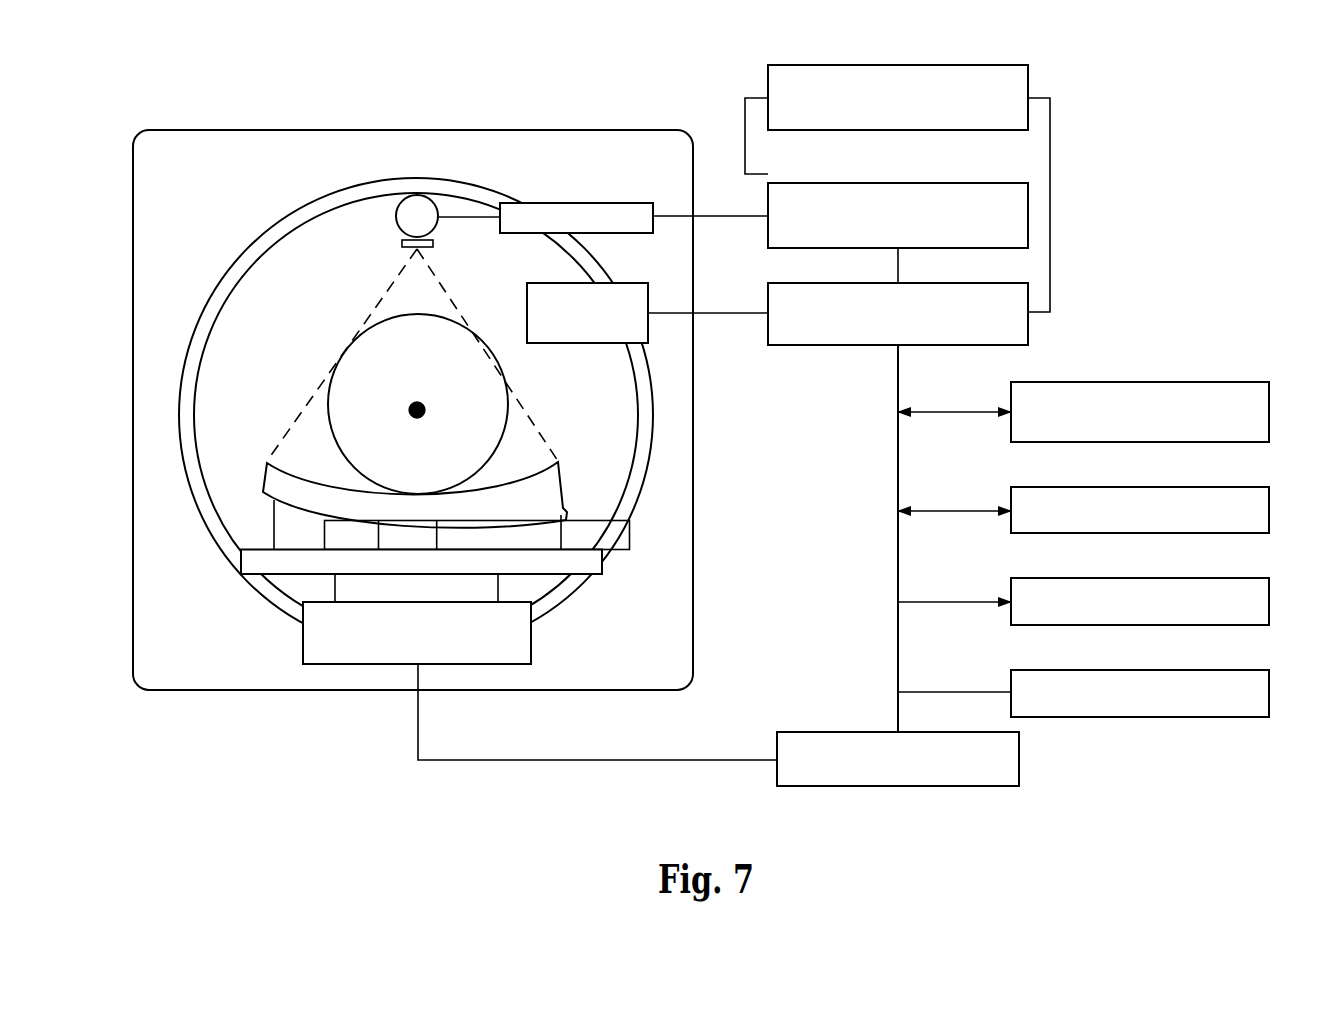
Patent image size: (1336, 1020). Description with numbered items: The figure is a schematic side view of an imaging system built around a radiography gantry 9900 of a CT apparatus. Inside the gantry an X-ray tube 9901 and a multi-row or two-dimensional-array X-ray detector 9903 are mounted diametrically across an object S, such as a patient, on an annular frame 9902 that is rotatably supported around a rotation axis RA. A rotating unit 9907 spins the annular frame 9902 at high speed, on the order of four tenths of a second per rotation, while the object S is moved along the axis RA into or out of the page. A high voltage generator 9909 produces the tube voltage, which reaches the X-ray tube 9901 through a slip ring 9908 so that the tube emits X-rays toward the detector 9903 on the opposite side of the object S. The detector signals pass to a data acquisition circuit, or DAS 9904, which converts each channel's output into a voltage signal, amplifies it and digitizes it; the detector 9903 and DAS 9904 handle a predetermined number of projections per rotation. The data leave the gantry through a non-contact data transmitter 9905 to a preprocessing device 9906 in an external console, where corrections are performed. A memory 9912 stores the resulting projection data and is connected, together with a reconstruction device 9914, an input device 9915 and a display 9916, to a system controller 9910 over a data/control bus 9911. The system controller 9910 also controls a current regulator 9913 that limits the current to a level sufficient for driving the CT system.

The radiography gantry 9900 is at (226, 130).
The X-ray tube 9901 is at (395, 217).
The annular frame 9902 is at (660, 417).
The X-ray detector 9903 is at (567, 478).
The data acquisition circuit (DAS) 9904 is at (603, 556).
The non-contact data transmitter 9905 is at (531, 652).
The preprocessing device 9906 is at (783, 730).
The rotating unit 9907 is at (565, 283).
The slip ring 9908 is at (542, 203).
The high voltage generator 9909 is at (1028, 213).
The system controller 9910 is at (1028, 290).
The data/control bus 9911 is at (893, 457).
The memory 9912 is at (1075, 487).
The current regulator 9913 is at (997, 64).
The reconstruction device 9914 is at (1102, 382).
The input device 9915 is at (1073, 670).
The display 9916 is at (1083, 578).
The object S is at (360, 394).
The rotation axis RA is at (428, 403).